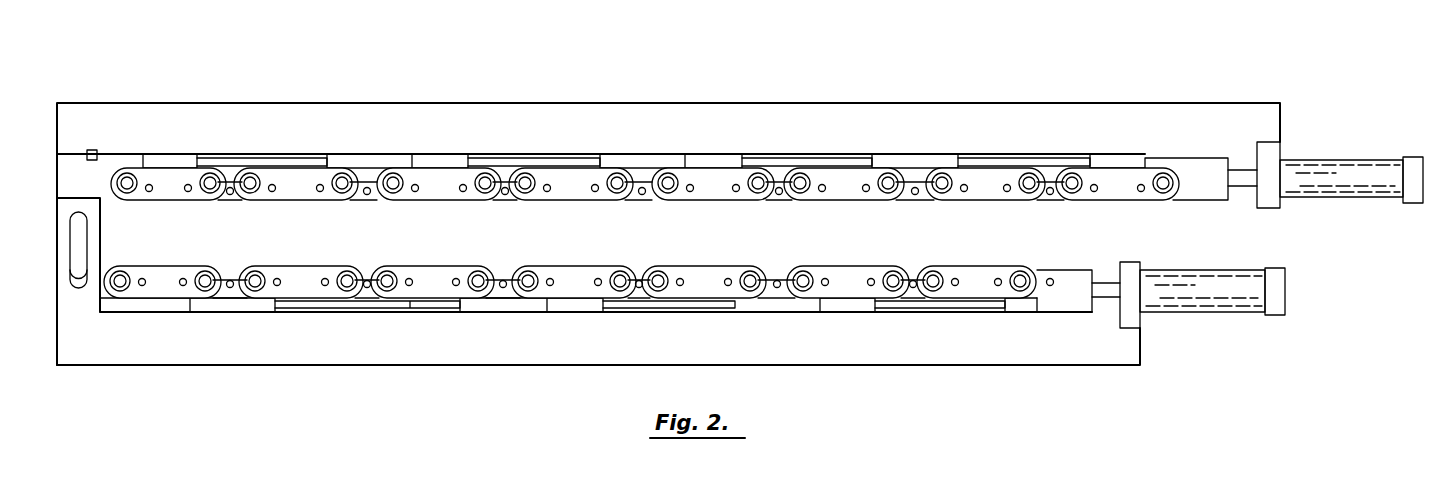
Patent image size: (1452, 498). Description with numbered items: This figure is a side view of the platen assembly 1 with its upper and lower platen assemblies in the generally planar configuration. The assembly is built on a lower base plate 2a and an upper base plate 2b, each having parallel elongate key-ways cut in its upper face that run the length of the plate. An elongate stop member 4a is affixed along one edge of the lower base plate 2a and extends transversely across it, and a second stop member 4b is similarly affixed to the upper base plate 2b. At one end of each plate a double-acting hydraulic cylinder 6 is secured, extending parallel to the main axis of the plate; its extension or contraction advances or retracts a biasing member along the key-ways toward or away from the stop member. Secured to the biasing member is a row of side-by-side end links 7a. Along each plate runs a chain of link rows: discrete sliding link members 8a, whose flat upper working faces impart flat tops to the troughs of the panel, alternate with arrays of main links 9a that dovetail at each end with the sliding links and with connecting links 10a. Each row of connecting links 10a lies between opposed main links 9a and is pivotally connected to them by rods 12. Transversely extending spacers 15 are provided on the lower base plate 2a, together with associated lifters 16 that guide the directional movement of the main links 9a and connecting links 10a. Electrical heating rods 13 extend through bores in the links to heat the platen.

The platen assembly 1 is at (1069, 53).
The lower base plate 2a is at (947, 367).
The upper base plate 2b is at (697, 106).
The stop member 4a is at (102, 223).
The second stop member 4b is at (96, 196).
The double-acting hydraulic cylinder 6 is at (1337, 170).
The end link 7a is at (1210, 200).
The sliding link member 8a is at (916, 200).
The main link 9a is at (995, 202).
The connecting link 10a is at (780, 200).
The rod 12 is at (125, 272).
The electrical heating rod 13 is at (183, 272).
The spacer 15 is at (290, 162).
The lifter 16 is at (229, 168).